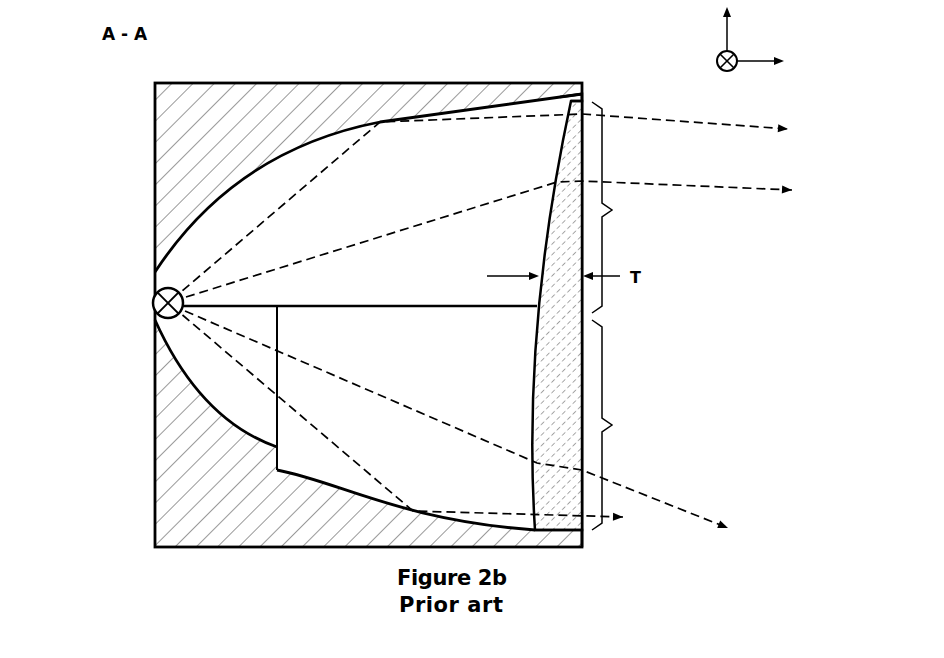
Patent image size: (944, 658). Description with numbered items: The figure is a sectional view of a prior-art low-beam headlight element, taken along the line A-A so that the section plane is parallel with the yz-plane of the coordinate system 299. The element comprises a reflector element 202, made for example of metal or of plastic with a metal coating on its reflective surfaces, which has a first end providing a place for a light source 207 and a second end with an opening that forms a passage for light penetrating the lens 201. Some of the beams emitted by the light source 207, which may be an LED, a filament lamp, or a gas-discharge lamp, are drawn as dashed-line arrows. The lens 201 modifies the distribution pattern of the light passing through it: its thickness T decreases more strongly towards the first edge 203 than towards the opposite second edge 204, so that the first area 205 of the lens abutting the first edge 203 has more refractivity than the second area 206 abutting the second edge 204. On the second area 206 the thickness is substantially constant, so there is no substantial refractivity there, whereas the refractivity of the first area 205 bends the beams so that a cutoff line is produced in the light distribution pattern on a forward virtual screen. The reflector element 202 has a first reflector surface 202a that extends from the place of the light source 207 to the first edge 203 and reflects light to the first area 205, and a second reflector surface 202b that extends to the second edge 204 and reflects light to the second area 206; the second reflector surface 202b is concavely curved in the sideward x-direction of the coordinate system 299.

The lens 201 is at (533, 381).
The reflector element 202 is at (252, 83).
The first reflector surface 202a is at (243, 178).
The second reflector surface 202b is at (326, 477).
The first edge 203 is at (583, 96).
The second edge 204 is at (584, 531).
The first area 205 is at (612, 210).
The second area 206 is at (612, 425).
The light source 207 is at (152, 305).
The coordinate system 299 is at (787, 36).